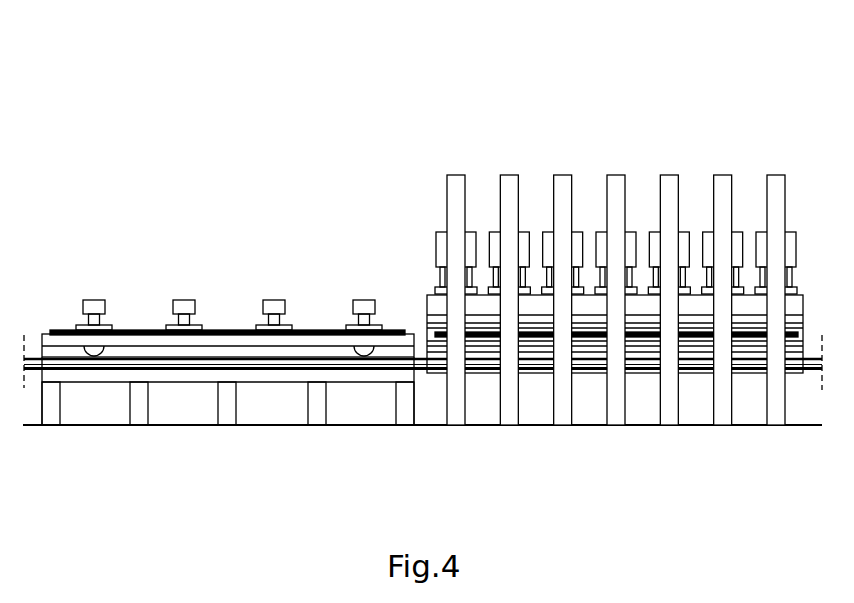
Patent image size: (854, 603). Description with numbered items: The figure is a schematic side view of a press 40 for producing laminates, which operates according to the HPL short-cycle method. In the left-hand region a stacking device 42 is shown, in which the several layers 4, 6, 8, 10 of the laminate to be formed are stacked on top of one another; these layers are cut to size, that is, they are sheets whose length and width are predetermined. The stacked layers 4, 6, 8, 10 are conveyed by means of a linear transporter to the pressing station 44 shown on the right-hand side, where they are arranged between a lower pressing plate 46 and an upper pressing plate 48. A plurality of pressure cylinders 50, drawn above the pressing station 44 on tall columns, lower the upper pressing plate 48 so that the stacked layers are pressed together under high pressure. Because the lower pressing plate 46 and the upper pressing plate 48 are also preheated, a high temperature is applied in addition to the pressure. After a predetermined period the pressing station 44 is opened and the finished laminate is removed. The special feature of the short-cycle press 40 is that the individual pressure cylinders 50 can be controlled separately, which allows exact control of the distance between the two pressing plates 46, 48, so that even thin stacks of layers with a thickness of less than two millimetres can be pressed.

The press 40 is at (276, 118).
The stacking device 42 is at (186, 452).
The pressing station 44 is at (594, 454).
The lower pressing plate 46 is at (488, 338).
The upper pressing plate 48 is at (530, 328).
The pressure cylinders 50 is at (434, 220).
The layer 4 is at (227, 289).
The layer 6 is at (227, 289).
The layer 8 is at (227, 289).
The layer 10 is at (327, 330).